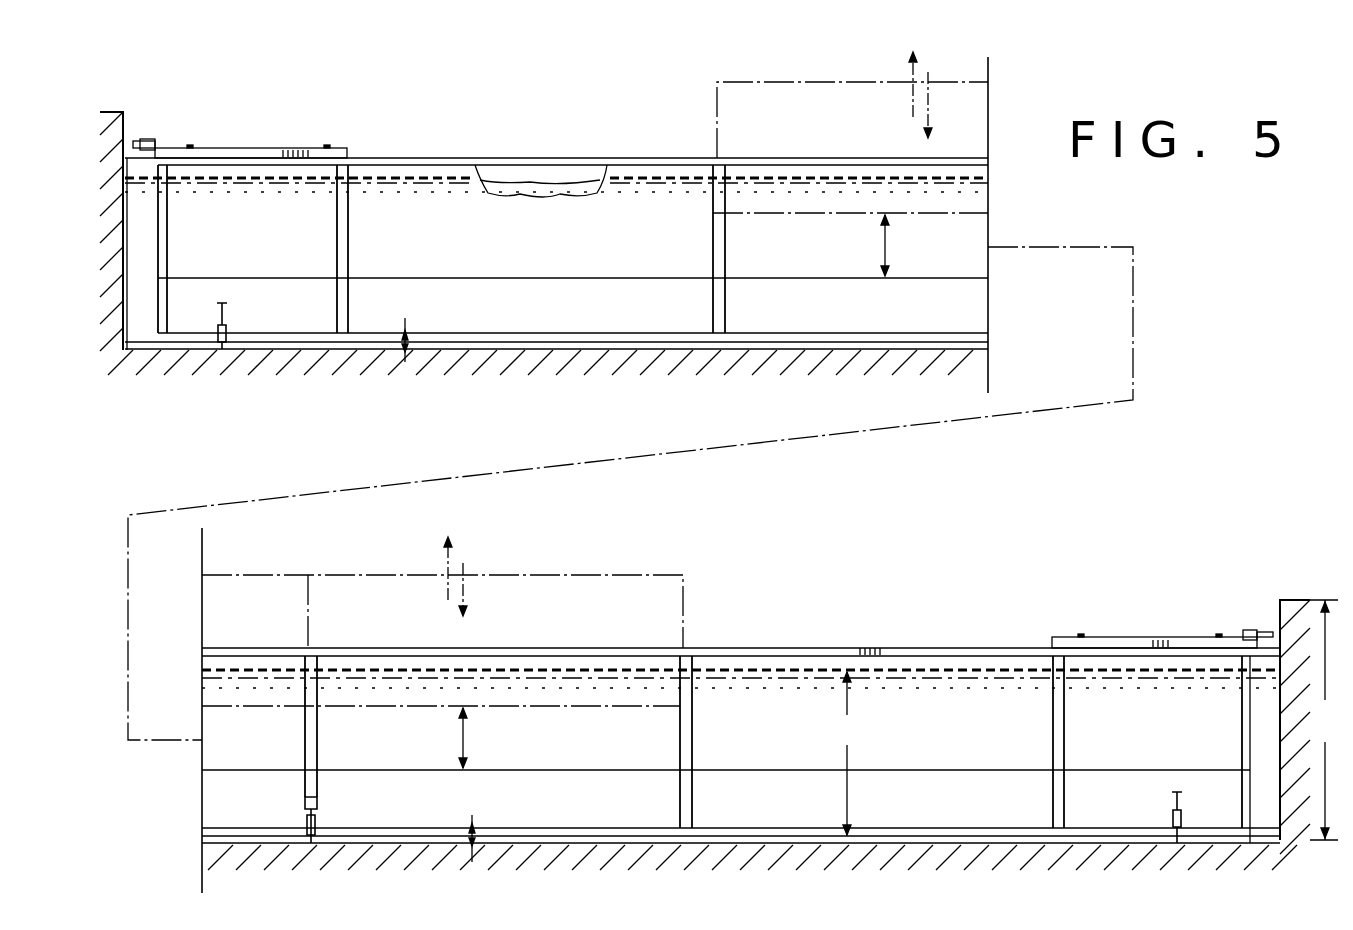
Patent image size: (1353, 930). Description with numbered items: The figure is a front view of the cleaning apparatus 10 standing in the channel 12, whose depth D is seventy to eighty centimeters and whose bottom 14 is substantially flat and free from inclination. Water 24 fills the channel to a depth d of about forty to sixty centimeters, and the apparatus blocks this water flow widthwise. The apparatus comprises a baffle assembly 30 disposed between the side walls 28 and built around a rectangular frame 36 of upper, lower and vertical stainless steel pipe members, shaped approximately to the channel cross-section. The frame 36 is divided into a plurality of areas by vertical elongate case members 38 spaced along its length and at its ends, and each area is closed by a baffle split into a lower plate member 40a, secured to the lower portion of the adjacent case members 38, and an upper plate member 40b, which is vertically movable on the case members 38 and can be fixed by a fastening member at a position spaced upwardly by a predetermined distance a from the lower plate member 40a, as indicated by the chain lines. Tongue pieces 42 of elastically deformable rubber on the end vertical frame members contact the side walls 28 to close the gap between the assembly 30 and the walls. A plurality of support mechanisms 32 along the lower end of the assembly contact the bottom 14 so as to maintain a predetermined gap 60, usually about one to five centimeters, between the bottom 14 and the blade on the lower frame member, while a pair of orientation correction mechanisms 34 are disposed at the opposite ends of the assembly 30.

The cleaning apparatus 10 is at (684, 87).
The channel 12 is at (113, 114).
The bottom 14 is at (878, 355).
The water 24 is at (642, 185).
The side wall 28 is at (133, 133).
The baffle assembly 30 is at (777, 158).
The support mechanism 32 is at (223, 350).
The orientation correction mechanism 34 is at (172, 143).
The rectangular frame 36 is at (568, 157).
The case member 38 is at (170, 238).
The lower plate member 40a is at (485, 322).
The upper plate member 40b is at (850, 82).
The tongue piece 42 is at (135, 265).
The gap 60 is at (410, 355).
The predetermined distance a is at (884, 247).
The depth of the water d is at (846, 753).
The depth of the channel D is at (1324, 720).